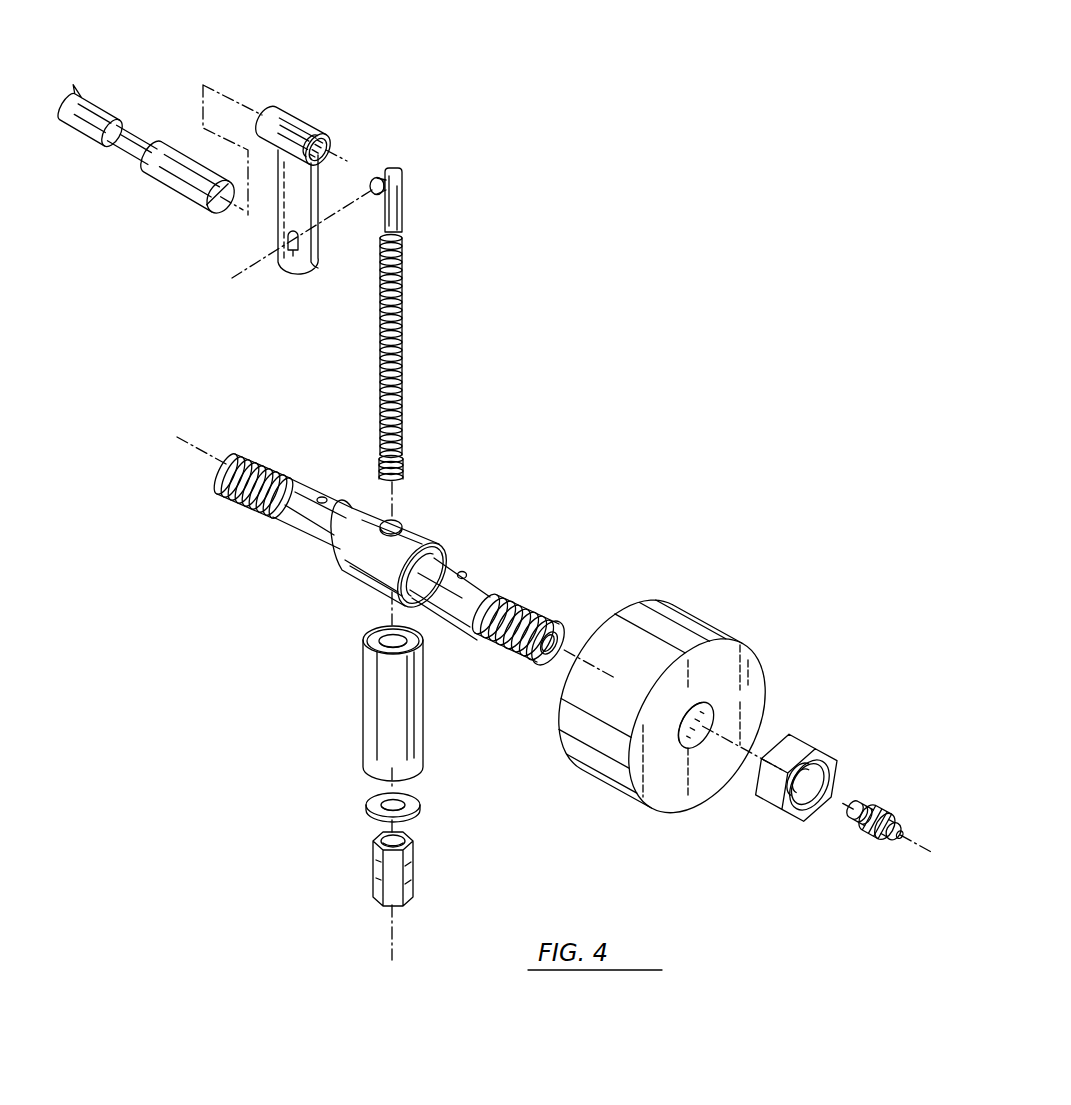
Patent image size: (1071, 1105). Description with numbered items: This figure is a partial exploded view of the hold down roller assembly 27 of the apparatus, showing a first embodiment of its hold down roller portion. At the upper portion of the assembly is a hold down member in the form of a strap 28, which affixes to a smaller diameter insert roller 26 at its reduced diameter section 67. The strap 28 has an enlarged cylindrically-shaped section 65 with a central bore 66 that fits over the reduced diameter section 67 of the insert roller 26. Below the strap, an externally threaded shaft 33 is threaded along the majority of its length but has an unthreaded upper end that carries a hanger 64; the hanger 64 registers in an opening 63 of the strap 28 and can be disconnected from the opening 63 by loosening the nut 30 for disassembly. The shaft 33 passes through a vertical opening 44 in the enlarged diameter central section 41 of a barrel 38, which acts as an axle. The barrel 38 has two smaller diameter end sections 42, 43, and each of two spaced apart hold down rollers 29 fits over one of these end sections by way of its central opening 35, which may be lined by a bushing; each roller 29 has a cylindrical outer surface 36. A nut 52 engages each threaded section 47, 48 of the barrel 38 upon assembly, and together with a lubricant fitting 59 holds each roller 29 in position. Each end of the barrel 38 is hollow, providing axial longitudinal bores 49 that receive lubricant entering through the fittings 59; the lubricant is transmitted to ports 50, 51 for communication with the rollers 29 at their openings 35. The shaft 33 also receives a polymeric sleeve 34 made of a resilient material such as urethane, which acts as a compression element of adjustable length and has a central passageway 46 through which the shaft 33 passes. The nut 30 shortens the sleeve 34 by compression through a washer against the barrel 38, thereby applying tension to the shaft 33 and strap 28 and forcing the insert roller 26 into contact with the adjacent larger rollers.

The smaller diameter insert roller 26 is at (177, 171).
The hold down roller assembly 27 is at (584, 324).
The strap 28 is at (252, 256).
The hold down roller 29 is at (752, 662).
The nut 30 is at (415, 864).
The externally threaded shaft 33 is at (402, 449).
The polymeric sleeve 34 is at (324, 703).
The central opening 35 is at (709, 724).
The cylindrical outer surface 36 is at (676, 686).
The barrel 38 is at (412, 552).
The enlarged diameter central section 41 is at (394, 557).
The smaller diameter end section 42 is at (312, 513).
The smaller diameter end section 43 is at (450, 599).
The vertical opening 44 is at (400, 522).
The central passageway 46 is at (376, 638).
The threaded section 47 is at (253, 486).
The threaded section 48 is at (500, 650).
The axial longitudinal bore 49 is at (231, 454).
The port 50 is at (329, 493).
The port 51 is at (468, 570).
The nut 52 is at (778, 818).
The lubricant fitting 59 is at (869, 842).
The opening 63 is at (288, 252).
The hanger 64 is at (377, 177).
The enlarged cylindrically-shaped section 65 is at (348, 98).
The central bore 66 is at (328, 147).
The reduced diameter section 67 is at (136, 128).